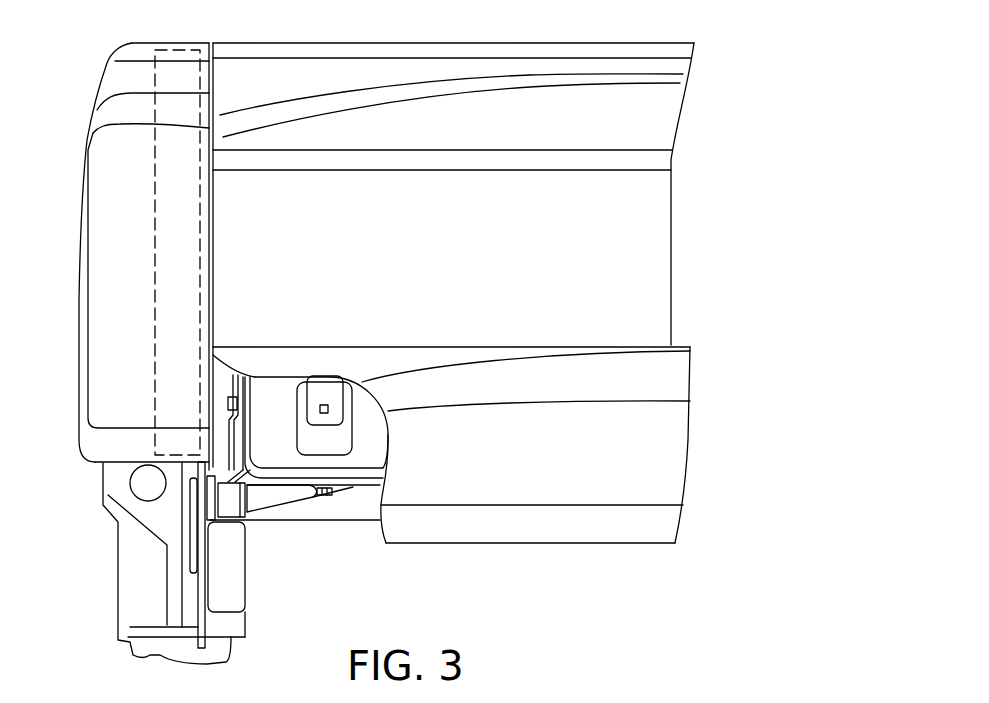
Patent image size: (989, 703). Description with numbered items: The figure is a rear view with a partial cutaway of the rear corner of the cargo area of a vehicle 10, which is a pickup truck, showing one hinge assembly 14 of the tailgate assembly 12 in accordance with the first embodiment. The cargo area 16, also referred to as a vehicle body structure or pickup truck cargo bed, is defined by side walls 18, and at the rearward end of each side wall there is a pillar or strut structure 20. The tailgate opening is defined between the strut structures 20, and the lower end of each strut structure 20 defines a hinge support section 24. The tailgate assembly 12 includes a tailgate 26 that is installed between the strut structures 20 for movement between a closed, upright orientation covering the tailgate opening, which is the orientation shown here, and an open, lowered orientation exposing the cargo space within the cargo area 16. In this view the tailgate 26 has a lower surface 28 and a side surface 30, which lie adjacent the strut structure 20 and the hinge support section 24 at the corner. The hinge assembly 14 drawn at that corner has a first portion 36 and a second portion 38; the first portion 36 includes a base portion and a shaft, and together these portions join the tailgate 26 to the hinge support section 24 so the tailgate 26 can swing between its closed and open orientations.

The vehicle 10 is at (609, 25).
The tailgate assembly 12 is at (221, 41).
The hinge assembly 14 is at (266, 519).
The cargo area 16 is at (206, 41).
The side walls 18 is at (105, 78).
The strut structures 20 is at (155, 85).
The hinge support sections 24 is at (220, 528).
The tailgate 26 is at (610, 242).
The lower surface 28 is at (355, 483).
The side surface 30 is at (240, 432).
The first portion 36 is at (233, 471).
The second portion 38 is at (298, 498).